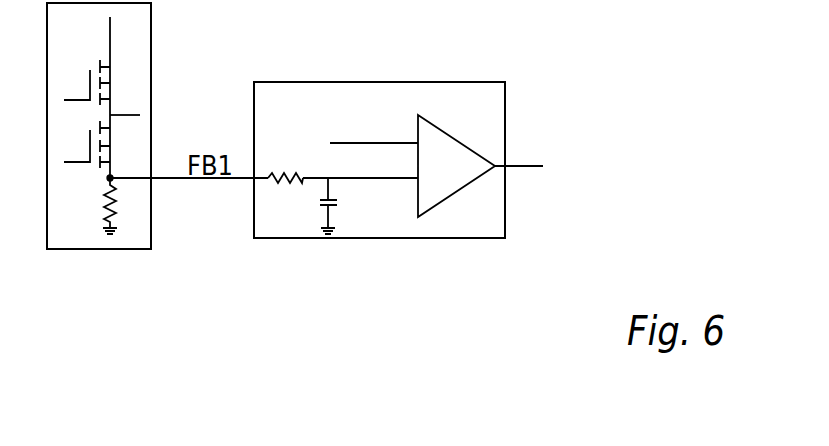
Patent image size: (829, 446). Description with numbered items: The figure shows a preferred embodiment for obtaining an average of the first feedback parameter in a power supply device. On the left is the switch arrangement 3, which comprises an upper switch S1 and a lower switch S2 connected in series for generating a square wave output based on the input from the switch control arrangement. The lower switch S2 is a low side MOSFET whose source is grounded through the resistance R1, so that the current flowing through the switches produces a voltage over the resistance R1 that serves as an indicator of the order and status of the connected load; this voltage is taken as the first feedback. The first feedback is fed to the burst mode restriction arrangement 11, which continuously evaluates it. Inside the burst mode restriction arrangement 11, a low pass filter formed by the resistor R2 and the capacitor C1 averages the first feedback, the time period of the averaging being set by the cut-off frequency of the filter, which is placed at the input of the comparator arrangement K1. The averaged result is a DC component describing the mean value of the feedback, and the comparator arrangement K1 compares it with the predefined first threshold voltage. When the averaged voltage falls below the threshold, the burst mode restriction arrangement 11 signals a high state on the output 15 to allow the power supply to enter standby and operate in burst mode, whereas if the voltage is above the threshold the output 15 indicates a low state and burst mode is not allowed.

The switch arrangement 3 is at (99, 163).
The burst mode restriction arrangement 11 is at (379, 159).
The output 15 is at (533, 166).
The upper switch S1 is at (82, 82).
The lower switch S2 is at (82, 144).
The resistance R1 is at (92, 206).
The resistor R2 is at (286, 164).
The capacitor C1 is at (345, 206).
The comparator arrangement K1 is at (456, 166).